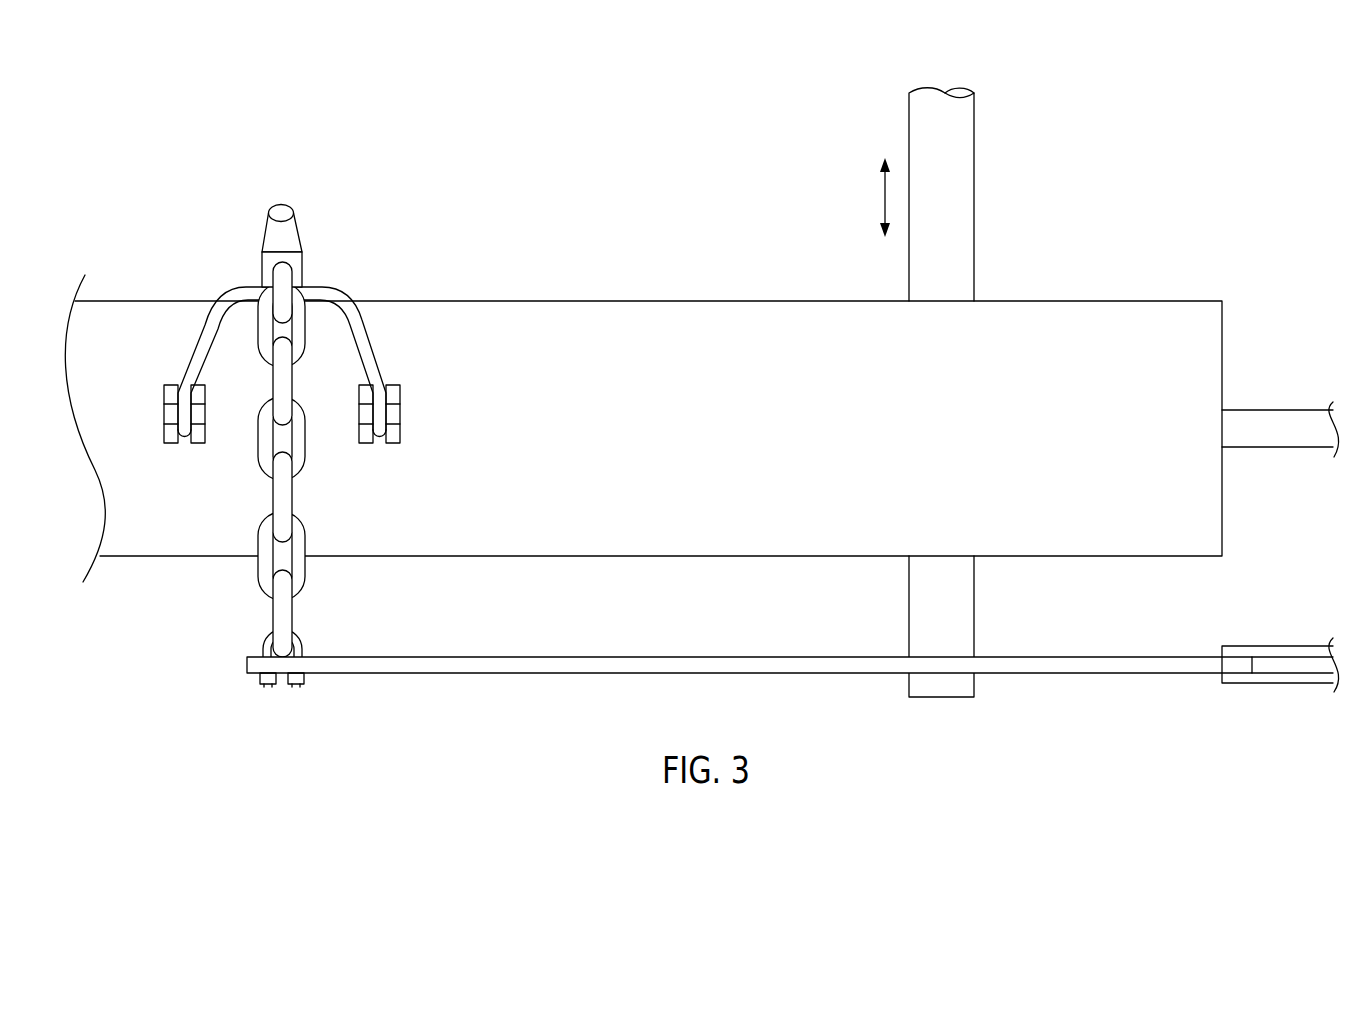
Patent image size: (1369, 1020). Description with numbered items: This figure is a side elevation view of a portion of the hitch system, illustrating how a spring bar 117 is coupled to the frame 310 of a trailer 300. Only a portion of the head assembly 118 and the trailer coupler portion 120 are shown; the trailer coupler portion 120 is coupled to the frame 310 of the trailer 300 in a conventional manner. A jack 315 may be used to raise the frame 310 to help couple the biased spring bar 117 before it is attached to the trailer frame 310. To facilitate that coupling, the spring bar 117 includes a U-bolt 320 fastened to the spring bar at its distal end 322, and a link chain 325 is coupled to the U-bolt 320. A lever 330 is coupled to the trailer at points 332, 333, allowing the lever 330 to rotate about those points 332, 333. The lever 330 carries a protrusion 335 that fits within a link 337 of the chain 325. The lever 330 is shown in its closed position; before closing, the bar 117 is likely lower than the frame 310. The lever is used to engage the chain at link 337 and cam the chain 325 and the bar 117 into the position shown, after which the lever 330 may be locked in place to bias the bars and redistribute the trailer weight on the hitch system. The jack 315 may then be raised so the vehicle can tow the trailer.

The trailer 300 is at (178, 140).
The frame 310 is at (606, 300).
The jack 315 is at (976, 196).
The U-bolt 320 is at (299, 643).
The distal end 322 is at (259, 663).
The link chain 325 is at (291, 431).
The lever 330 is at (331, 289).
The point 332 is at (163, 414).
The point 333 is at (401, 413).
The protrusion 335 is at (283, 262).
The link 337 is at (274, 383).
The spring bar 117 is at (606, 656).
The head assembly 118 is at (1275, 646).
The trailer coupler portion 120 is at (1275, 408).